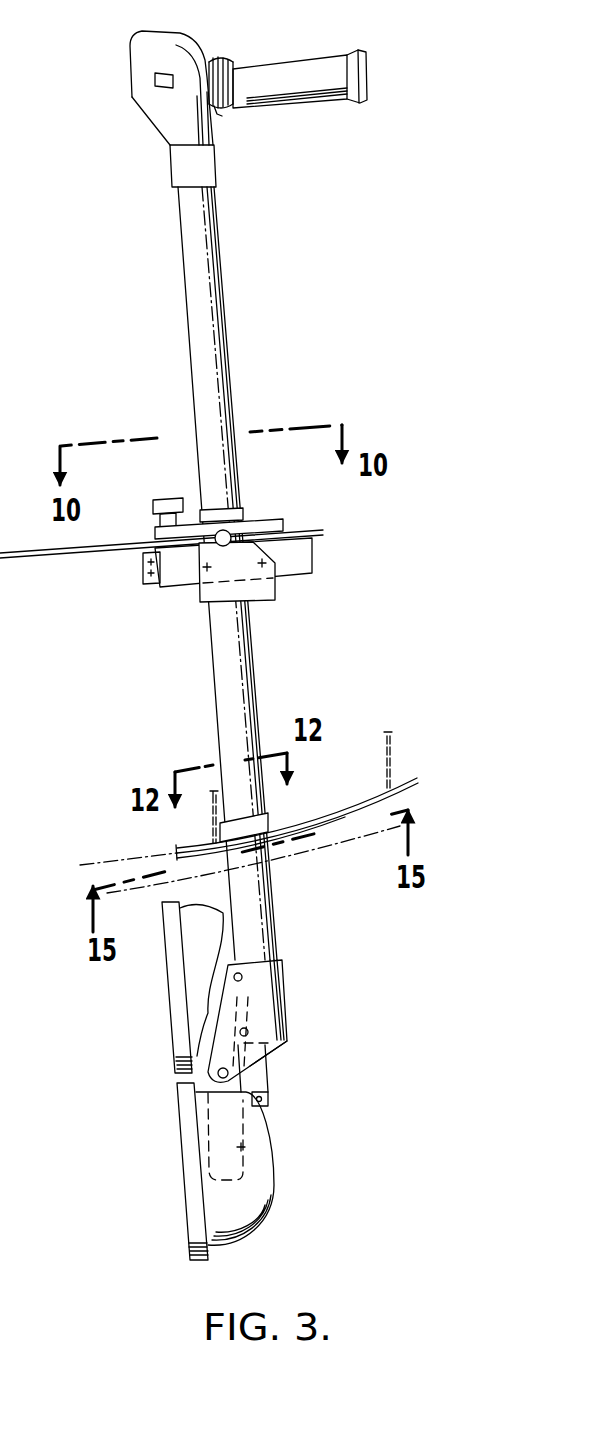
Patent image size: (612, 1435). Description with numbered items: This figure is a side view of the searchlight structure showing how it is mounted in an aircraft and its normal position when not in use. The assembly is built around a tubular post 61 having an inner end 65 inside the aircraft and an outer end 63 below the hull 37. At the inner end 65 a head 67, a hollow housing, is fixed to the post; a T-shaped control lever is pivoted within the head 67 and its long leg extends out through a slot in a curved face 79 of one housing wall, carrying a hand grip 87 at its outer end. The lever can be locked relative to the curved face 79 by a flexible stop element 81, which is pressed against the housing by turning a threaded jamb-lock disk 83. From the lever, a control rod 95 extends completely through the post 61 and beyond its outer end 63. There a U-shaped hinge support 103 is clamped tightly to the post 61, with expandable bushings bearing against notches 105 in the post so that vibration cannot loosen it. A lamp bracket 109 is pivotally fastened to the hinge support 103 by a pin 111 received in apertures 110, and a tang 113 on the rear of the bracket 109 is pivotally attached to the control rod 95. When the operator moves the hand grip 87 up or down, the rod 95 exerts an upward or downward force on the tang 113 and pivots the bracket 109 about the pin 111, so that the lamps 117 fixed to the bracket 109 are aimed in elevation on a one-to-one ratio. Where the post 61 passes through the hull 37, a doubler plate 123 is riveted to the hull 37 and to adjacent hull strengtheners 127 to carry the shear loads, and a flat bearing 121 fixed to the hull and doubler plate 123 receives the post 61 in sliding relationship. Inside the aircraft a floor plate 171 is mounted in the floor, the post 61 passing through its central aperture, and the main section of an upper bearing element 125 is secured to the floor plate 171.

The hull 37 is at (337, 810).
The tubular post 61 is at (192, 320).
The outer end of post 63 is at (296, 991).
The inner end of post 65 is at (240, 181).
The head 67 is at (137, 66).
The curved face 79 is at (178, 46).
The stop element 81 is at (200, 98).
The jamb-lock disk 83 is at (217, 114).
The hand grip 87 is at (307, 92).
The control rod 95 is at (263, 1073).
The hinge support 103 is at (269, 1056).
The notches 105 is at (242, 975).
The lamp bracket 109 is at (247, 1147).
The apertures 110 is at (218, 1075).
The pin 111 is at (213, 1062).
The tang 113 is at (254, 1090).
The lamps 117 is at (161, 983).
The bearing 121 is at (281, 816).
The doubler plate 123 is at (308, 833).
The upper bearing element 125 is at (317, 515).
The hull strengtheners 127 is at (212, 815).
The floor plate 171 is at (310, 492).